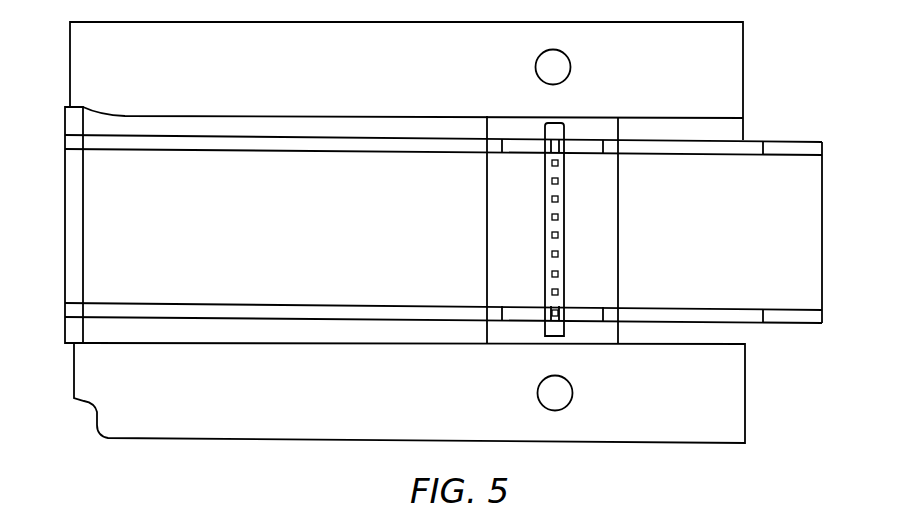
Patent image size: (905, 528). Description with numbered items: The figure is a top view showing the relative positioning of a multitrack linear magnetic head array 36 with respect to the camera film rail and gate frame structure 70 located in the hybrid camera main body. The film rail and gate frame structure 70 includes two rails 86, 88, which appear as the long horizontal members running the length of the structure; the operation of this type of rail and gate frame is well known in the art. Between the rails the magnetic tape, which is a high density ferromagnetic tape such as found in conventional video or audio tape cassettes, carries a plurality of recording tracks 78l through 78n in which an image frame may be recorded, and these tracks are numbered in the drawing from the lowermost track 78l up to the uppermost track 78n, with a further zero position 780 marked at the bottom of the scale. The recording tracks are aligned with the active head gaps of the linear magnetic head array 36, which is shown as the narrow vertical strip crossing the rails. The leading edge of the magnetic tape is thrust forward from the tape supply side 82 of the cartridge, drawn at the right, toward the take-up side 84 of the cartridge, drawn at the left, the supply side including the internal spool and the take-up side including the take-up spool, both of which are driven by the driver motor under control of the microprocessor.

The film rail and gate frame structure 70 is at (82, 64).
The take-up side 84 is at (100, 220).
The rail 86 is at (339, 143).
The rail 88 is at (134, 310).
The tape supply side 82 is at (804, 268).
The linear magnetic head array 36 is at (563, 246).
The recording track 78n is at (518, 156).
The recording track 78l is at (550, 290).
The indicator position 0 780 is at (552, 337).